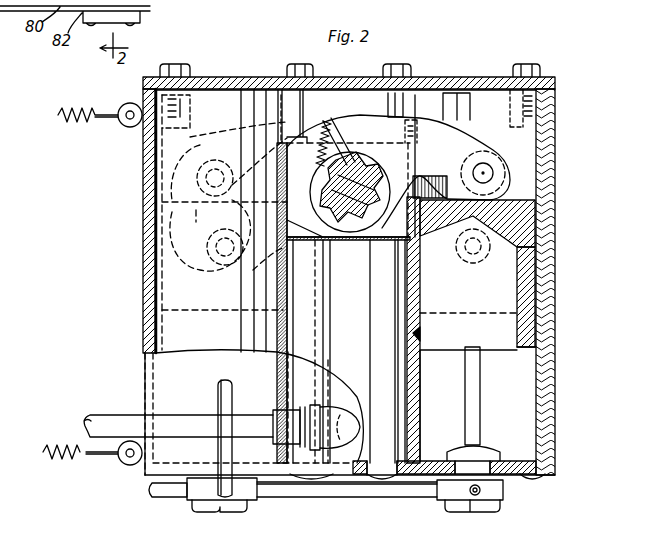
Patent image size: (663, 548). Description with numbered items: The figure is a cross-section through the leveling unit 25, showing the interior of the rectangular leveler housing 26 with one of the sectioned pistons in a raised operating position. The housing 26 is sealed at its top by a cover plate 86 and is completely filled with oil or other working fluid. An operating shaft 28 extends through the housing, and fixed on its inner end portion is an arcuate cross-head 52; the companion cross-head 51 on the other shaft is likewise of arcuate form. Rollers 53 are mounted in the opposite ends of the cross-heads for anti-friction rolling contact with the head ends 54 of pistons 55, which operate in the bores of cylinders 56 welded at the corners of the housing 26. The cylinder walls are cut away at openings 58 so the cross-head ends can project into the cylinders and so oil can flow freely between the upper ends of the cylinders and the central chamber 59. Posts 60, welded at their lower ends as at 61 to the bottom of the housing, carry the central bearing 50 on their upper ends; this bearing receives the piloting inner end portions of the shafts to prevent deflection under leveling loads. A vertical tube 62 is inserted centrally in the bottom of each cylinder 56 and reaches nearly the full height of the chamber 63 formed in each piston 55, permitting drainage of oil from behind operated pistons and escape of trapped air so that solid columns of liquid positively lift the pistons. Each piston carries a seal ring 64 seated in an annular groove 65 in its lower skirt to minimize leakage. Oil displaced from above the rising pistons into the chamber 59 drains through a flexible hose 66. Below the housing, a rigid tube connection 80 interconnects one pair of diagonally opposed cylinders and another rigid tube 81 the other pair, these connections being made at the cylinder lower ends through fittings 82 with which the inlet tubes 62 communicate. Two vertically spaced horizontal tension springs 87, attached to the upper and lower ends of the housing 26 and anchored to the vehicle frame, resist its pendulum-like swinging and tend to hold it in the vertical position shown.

The leveling unit 25 is at (136, 226).
The leveler housing 26 is at (147, 380).
The operating shaft 28 is at (338, 214).
The central bearing 50 is at (298, 238).
The cross-head 51 is at (330, 108).
The cross-head 52 is at (443, 127).
The rollers 53 is at (540, 180).
The head end 54 is at (537, 210).
The piston 55 is at (570, 296).
The cylinder 56 is at (168, 297).
The openings 58 is at (300, 258).
The central chamber 59 is at (354, 351).
The posts 60 is at (351, 351).
The weld 61 is at (385, 480).
The vertical tube 62 is at (470, 372).
The piston chamber 63 is at (518, 260).
The seal ring 64 is at (410, 331).
The annular groove 65 is at (422, 330).
The flexible hose 66 is at (254, 416).
The rigid tube connection 80 is at (305, 497).
The rigid tube 81 is at (170, 497).
The fittings 82 is at (505, 491).
The cover plate 86 is at (214, 77).
The tension springs 87 is at (76, 120).